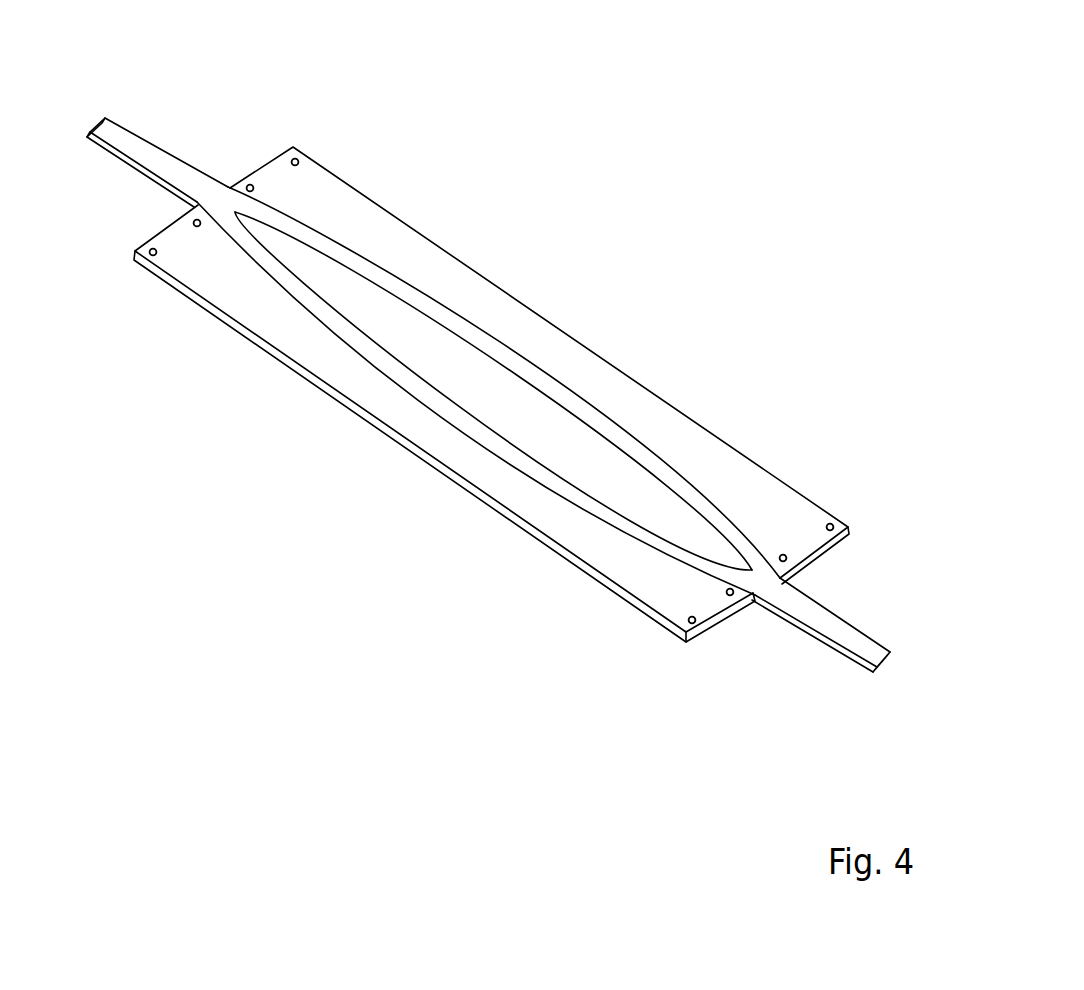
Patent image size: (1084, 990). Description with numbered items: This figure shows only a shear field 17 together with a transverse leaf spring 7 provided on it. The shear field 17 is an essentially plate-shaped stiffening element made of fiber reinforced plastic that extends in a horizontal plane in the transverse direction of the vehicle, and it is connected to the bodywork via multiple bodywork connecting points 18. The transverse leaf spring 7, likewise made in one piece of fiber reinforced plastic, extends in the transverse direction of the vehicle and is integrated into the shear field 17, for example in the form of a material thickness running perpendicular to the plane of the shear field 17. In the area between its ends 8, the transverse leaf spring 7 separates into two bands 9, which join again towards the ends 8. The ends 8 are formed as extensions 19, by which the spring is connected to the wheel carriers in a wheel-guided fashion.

The transverse leaf spring 7 is at (713, 491).
The ends of the transverse leaf spring 8 is at (110, 117).
The bands 9 is at (602, 422).
The shear field 17 is at (212, 283).
The bodywork connecting points 18 is at (302, 150).
The extensions 19 is at (158, 150).